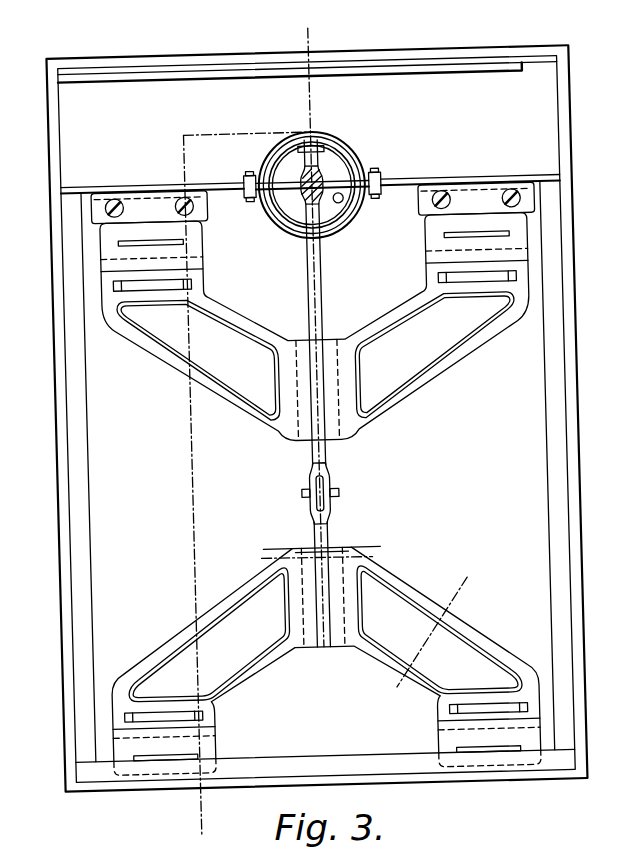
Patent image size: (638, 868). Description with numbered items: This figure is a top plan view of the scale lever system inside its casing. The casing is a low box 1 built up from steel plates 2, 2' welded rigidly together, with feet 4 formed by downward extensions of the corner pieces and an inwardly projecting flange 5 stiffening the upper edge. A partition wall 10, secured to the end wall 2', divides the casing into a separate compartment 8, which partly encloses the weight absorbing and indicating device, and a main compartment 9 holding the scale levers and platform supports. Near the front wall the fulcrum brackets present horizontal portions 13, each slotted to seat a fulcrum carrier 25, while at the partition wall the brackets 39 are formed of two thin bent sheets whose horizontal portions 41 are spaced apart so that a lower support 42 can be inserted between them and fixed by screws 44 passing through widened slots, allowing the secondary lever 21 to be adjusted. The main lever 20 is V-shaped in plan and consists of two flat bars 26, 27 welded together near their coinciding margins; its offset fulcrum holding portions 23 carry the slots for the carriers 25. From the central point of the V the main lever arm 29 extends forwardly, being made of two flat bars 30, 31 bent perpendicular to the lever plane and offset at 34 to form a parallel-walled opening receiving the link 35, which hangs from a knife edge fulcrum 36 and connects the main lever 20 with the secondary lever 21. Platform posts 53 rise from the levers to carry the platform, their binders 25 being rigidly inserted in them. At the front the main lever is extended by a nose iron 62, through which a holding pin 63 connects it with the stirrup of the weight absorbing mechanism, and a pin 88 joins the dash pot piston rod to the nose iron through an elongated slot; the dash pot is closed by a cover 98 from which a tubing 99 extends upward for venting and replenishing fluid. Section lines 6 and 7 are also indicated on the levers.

The low box 1 is at (567, 416).
The steel plate 2 is at (314, 419).
The end wall 2' is at (317, 428).
The feet 4 is at (251, 433).
The inwardly projecting flange 5 is at (58, 711).
The section line 6- 6 is at (428, 636).
The section line 7- 7 is at (258, 557).
The separate compartment 8 is at (465, 114).
The main compartment 9 is at (446, 481).
The partition wall 10 is at (314, 204).
The horizontal portion 13 is at (200, 734).
The main lever 20 is at (350, 650).
The secondary lever 21 is at (354, 337).
The fulcrum holding portion 23 is at (196, 254).
The fulcrum carrier 25 is at (123, 237).
The flat bar 26 is at (216, 635).
The flat bar 27 is at (209, 604).
The main lever arm 29 is at (325, 522).
The flat bar 30 is at (349, 543).
The flat bar 31 is at (327, 549).
The offset 34 is at (329, 486).
The link 35 is at (338, 493).
The knife edge fulcrum 36 is at (300, 492).
The bracket 39 is at (93, 196).
The horizontal portion 41 is at (139, 192).
The lower support 42 is at (208, 237).
The fastening screw 44 is at (200, 205).
The platform post 53 is at (195, 281).
The nose iron 62 is at (304, 160).
The holding pin 63 is at (333, 148).
The pin 88 is at (308, 190).
The cover 98 is at (338, 168).
The tubing 99 is at (349, 195).